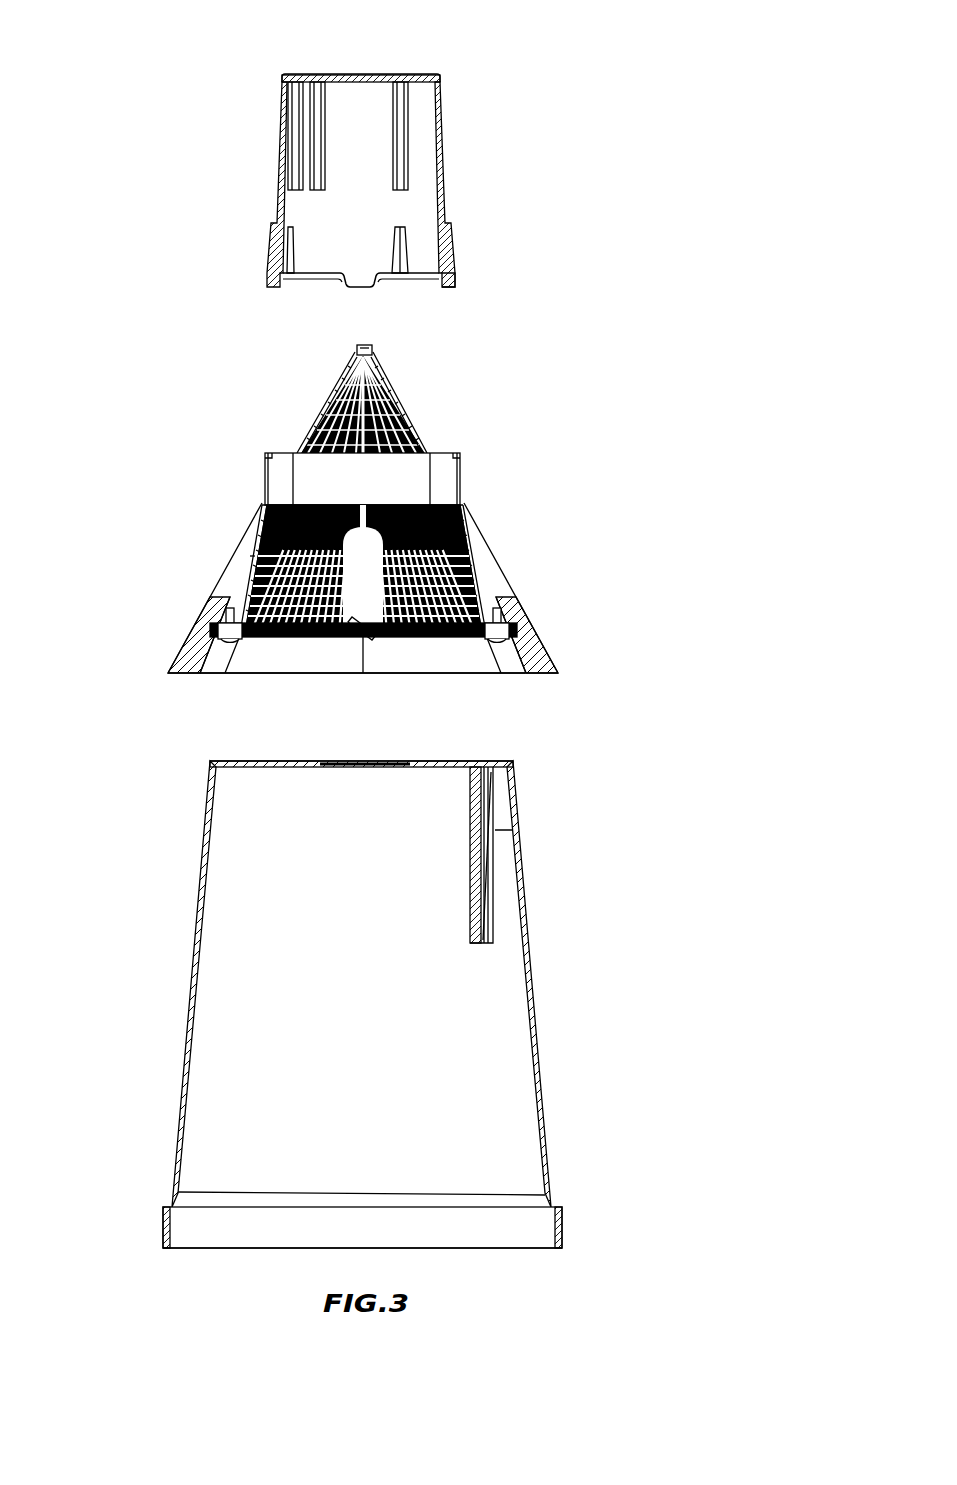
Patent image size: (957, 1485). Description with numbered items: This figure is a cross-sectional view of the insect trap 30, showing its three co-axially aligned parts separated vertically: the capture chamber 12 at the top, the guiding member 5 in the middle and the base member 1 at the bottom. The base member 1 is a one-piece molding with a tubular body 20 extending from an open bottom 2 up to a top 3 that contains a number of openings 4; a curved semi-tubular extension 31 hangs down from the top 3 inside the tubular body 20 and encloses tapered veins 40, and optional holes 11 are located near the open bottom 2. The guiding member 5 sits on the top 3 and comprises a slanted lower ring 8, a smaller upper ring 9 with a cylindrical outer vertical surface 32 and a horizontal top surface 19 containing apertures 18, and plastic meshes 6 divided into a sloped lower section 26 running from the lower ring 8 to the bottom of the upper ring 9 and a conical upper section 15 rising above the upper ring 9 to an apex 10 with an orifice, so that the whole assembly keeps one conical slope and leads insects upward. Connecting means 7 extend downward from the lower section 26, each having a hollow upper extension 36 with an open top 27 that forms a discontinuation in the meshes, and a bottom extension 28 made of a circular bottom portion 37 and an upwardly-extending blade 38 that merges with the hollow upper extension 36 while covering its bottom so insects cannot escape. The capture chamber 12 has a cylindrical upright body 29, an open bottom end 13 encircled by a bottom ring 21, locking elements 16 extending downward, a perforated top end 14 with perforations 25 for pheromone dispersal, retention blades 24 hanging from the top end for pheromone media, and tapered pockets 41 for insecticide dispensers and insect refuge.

The base member 1 is at (334, 1030).
The open bottom 2 is at (238, 1249).
The top 3 is at (290, 768).
The openings 4 is at (372, 768).
The guiding member 5 is at (364, 539).
The plastic meshes 6 is at (418, 415).
The connecting means 7 is at (480, 583).
The lower ring 8 is at (176, 658).
The upper ring 9 is at (462, 478).
The apex 10 is at (355, 347).
The holes 11 is at (552, 1205).
The capture chamber 12 is at (366, 176).
The open bottom end 13 is at (303, 276).
The perforated top end 14 is at (390, 76).
The upper section 15 is at (400, 392).
The locking elements 16 is at (378, 290).
The apertures 18 is at (277, 453).
The top surface 19 is at (456, 455).
The tubular body 20 is at (546, 1068).
The bottom ring 21 is at (455, 270).
The retention blades 24 is at (297, 124).
The perforations 25 is at (335, 75).
The lower section 26 is at (462, 505).
The open top 27 is at (480, 545).
The bottom extension 28 is at (497, 668).
The cylindrical upright body 29 is at (443, 160).
The insect trap 30 is at (145, 742).
The semi-tubular extension 31 is at (488, 928).
The outer vertical surface 32 is at (265, 470).
The hollow upper extension 36 is at (250, 563).
The bottom portion 37 is at (547, 642).
The cross-sectional, upwardly-extending blade 38 is at (503, 625).
The tapered veins 40 is at (490, 815).
The pockets 41 is at (410, 238).